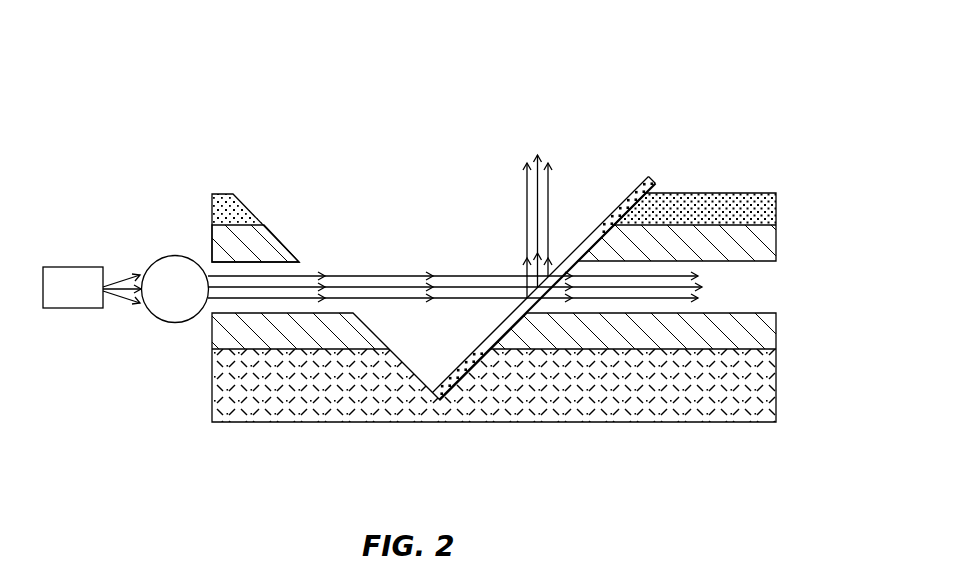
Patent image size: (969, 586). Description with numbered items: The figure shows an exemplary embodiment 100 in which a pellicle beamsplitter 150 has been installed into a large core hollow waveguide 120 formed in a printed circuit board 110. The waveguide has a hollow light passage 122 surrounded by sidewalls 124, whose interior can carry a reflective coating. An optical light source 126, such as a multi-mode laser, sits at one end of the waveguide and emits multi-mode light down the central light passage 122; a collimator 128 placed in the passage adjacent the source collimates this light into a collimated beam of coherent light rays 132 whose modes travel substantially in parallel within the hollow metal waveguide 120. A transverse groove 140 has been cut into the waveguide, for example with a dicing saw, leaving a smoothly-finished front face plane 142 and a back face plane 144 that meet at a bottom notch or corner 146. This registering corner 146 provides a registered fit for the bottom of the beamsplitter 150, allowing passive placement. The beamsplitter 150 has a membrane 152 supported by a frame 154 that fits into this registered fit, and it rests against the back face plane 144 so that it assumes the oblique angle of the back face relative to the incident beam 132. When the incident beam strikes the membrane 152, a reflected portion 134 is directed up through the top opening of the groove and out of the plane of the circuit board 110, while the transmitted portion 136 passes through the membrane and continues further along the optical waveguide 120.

The exemplary embodiment 100 is at (152, 66).
The printed circuit board 110 is at (235, 422).
The large core hollow waveguide 120 is at (254, 193).
The hollow light passage 122 is at (763, 292).
The sidewalls 124 is at (135, 276).
The optical light source 126 is at (67, 310).
The collimator 128 is at (177, 323).
The collimated beam of coherent light rays 132 is at (385, 274).
The reflected portion 134 is at (522, 178).
The transmitted portion 136 is at (675, 298).
The transverse groove 140 is at (402, 130).
The front face plane 142 is at (299, 230).
The back face plane 144 is at (513, 320).
The bottom notch or corner 146 is at (440, 401).
The pellicle beamsplitter 150 is at (677, 148).
The membrane 152 is at (563, 255).
The frame 154 is at (616, 161).